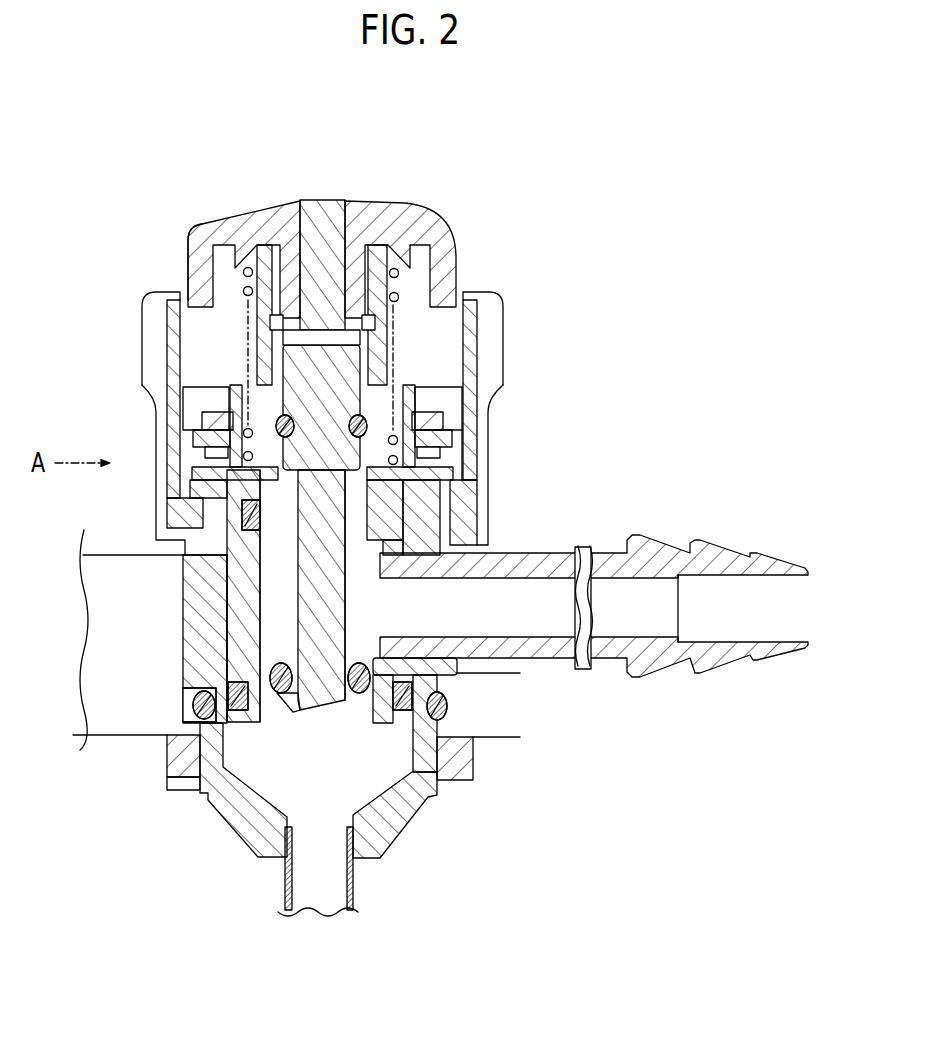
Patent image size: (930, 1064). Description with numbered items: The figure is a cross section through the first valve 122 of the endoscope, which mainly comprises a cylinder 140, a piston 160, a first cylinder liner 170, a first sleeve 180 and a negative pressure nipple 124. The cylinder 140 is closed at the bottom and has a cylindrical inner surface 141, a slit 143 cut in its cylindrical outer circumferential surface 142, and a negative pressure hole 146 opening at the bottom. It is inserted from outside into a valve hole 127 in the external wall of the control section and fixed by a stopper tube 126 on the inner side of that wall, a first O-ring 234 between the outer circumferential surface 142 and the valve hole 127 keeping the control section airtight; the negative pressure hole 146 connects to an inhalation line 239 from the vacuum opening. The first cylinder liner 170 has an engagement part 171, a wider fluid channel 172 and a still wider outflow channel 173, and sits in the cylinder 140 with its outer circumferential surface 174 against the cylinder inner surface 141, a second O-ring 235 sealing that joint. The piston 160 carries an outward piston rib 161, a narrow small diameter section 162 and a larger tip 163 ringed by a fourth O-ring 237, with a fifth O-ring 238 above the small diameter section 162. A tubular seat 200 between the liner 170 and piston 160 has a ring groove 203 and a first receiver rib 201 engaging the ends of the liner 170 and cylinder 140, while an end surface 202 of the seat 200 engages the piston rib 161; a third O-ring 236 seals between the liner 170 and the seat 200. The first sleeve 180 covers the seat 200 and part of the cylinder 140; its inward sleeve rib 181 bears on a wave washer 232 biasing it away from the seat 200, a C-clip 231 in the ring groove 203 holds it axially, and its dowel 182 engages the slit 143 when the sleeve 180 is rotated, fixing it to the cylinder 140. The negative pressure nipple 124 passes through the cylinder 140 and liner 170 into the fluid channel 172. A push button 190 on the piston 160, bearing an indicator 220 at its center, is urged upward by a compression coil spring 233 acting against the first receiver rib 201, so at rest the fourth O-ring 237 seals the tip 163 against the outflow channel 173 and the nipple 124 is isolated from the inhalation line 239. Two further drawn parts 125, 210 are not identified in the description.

The first valve 122 is at (160, 237).
The negative pressure nipple 124 is at (730, 665).
The housing body 125 is at (103, 738).
The stopper tube 126 is at (164, 762).
The valve hole 127 is at (176, 697).
The cylinder 140 is at (183, 602).
The cylinder inner surface 141 is at (225, 768).
The cylinder outer circumferential surface 142 is at (445, 520).
The slit 143 is at (205, 488).
The negative pressure hole 146 is at (347, 840).
The piston 160 is at (230, 652).
The piston rib 161 is at (365, 548).
The small diameter section 162 is at (385, 628).
The tip 163 is at (290, 700).
The first cylinder liner 170 is at (220, 658).
The engagement part 171 is at (280, 485).
The fluid channel 172 is at (252, 723).
The outflow channel 173 is at (275, 712).
The outer circumferential surface 174 is at (298, 606).
The first sleeve 180 is at (143, 330).
The sleeve rib 181 is at (190, 418).
The dowel 182 is at (175, 512).
The push button 190 is at (418, 209).
The tubular seat 200 is at (417, 395).
The first receiver rib 201 is at (200, 442).
The end surface 202 is at (225, 582).
The ring groove 203 is at (443, 423).
The spring 210 is at (396, 306).
The indicator 220 is at (300, 201).
The C-clip 231 is at (443, 408).
The wave washer 232 is at (432, 497).
The compression coil spring 233 is at (403, 272).
The first O-ring 234 is at (513, 675).
The second O-ring 235 is at (400, 710).
The third O-ring 236 is at (440, 563).
The fourth O-ring 237 is at (360, 700).
The fifth O-ring 238 is at (373, 415).
The inhalation line 239 is at (286, 888).